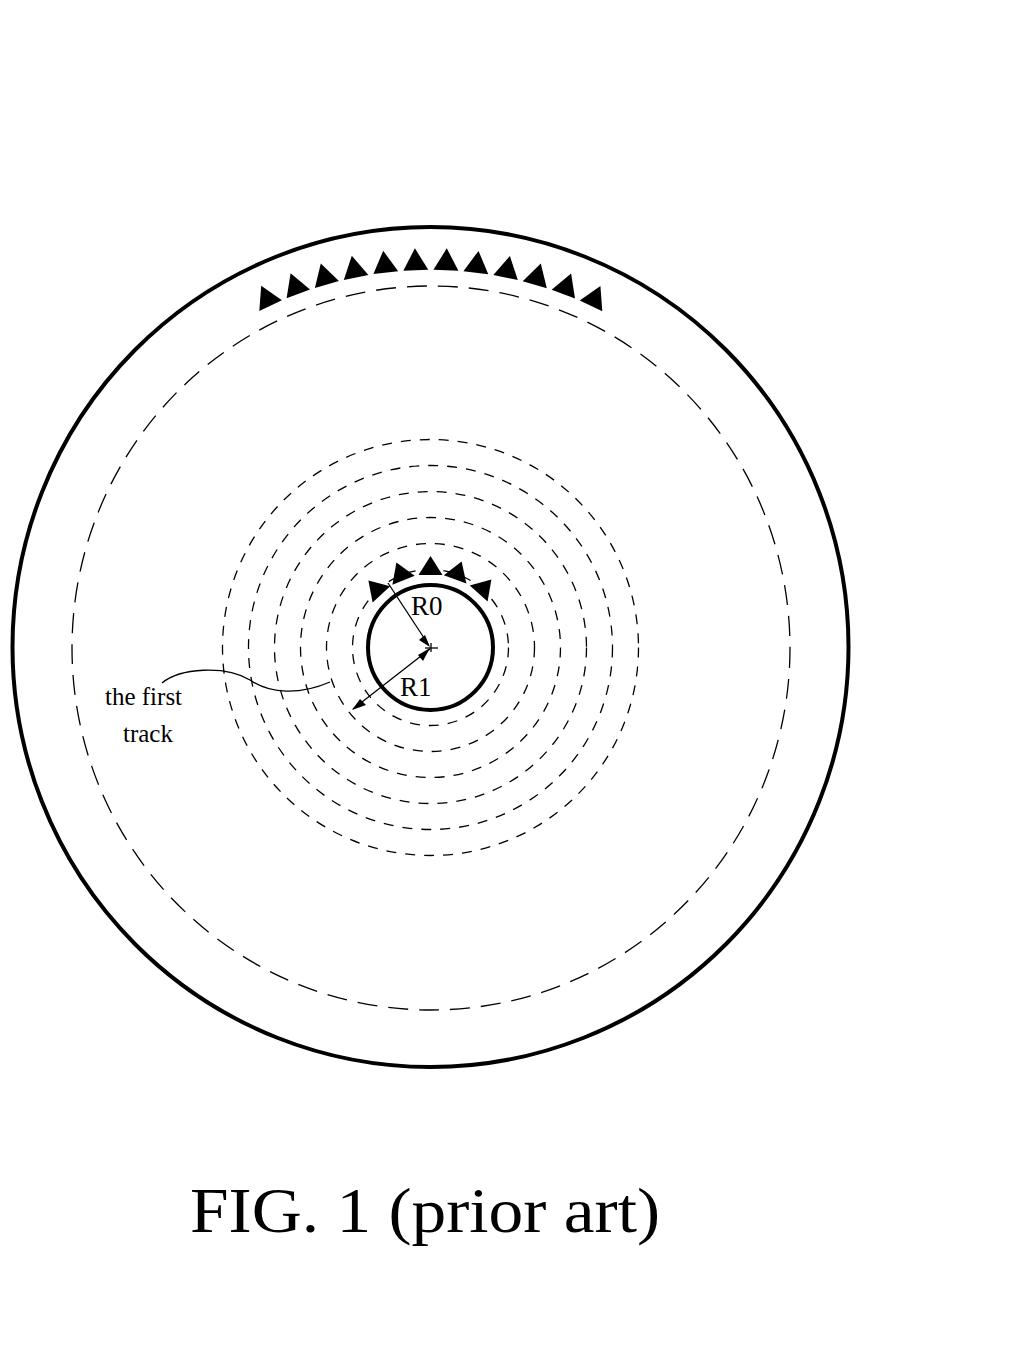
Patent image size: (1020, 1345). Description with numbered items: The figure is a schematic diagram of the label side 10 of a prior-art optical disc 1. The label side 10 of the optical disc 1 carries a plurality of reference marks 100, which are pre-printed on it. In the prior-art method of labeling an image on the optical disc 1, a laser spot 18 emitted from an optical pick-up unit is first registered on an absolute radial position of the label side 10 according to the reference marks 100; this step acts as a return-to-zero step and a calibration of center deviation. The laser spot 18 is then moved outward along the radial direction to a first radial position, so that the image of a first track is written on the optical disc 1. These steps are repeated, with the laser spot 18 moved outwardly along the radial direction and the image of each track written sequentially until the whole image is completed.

The optical disc 1 is at (134, 125).
The label side 10 is at (779, 468).
The laser spot 18 is at (384, 578).
The reference marks 100 is at (598, 292).